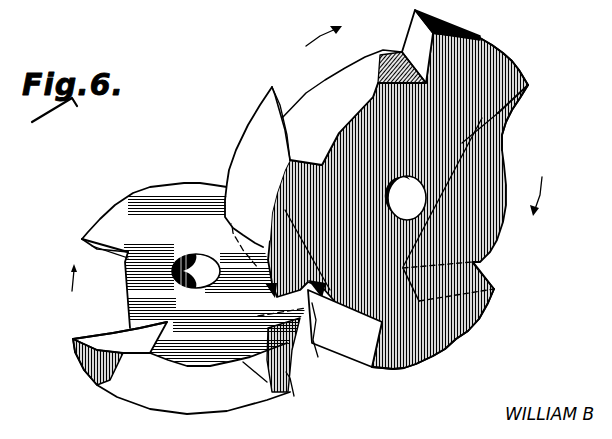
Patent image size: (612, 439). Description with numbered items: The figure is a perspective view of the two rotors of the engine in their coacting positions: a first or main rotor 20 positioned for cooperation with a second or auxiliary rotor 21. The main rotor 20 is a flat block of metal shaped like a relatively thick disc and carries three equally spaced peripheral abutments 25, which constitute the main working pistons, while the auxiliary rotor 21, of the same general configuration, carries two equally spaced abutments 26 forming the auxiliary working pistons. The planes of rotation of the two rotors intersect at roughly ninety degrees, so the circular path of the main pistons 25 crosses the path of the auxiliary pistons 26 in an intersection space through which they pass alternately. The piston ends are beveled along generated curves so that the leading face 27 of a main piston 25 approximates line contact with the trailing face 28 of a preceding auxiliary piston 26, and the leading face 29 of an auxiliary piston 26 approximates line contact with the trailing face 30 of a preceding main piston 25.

The main rotor 20 is at (508, 148).
The auxiliary rotor 21 is at (172, 192).
The peripheral abutments 25 is at (250, 122).
The abutments 26 is at (170, 412).
The leading face 27 is at (283, 104).
The trailing face 28 is at (107, 252).
The leading face 29 is at (93, 338).
The trailing face 30 is at (415, 40).